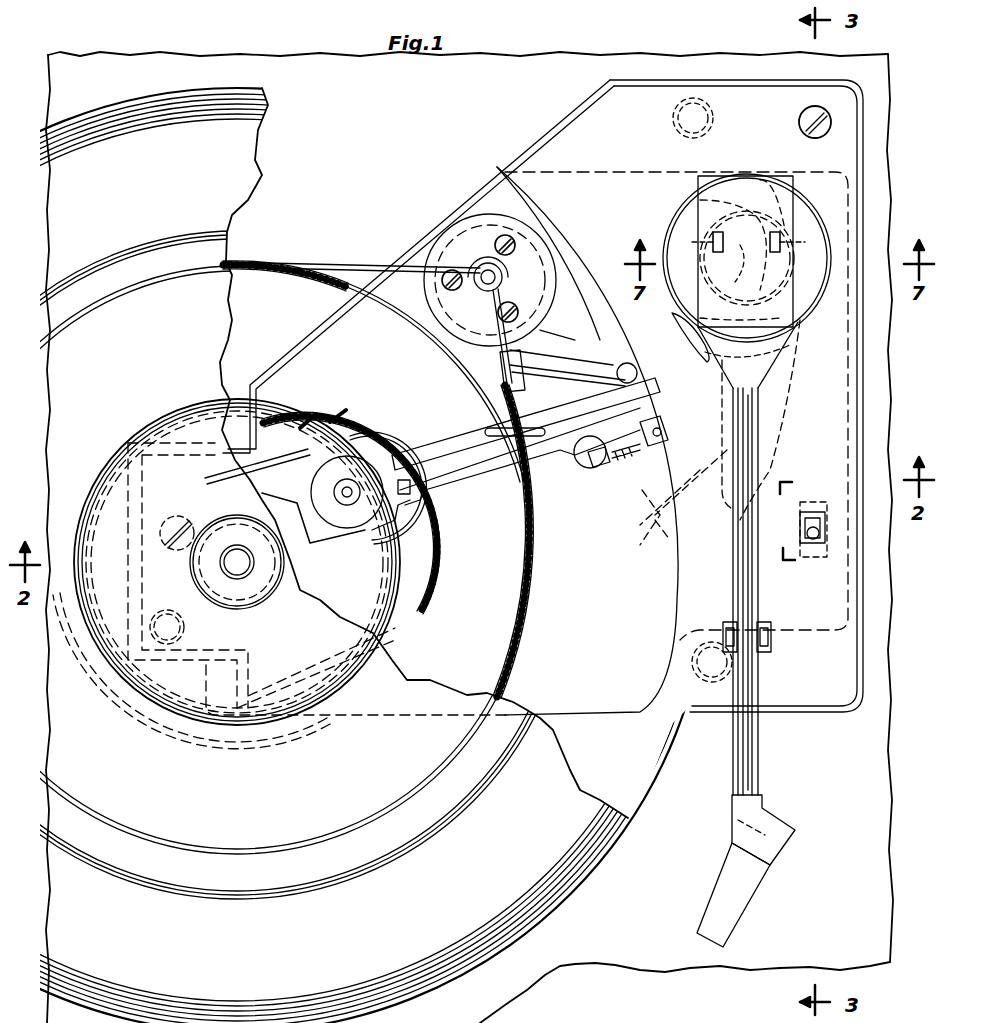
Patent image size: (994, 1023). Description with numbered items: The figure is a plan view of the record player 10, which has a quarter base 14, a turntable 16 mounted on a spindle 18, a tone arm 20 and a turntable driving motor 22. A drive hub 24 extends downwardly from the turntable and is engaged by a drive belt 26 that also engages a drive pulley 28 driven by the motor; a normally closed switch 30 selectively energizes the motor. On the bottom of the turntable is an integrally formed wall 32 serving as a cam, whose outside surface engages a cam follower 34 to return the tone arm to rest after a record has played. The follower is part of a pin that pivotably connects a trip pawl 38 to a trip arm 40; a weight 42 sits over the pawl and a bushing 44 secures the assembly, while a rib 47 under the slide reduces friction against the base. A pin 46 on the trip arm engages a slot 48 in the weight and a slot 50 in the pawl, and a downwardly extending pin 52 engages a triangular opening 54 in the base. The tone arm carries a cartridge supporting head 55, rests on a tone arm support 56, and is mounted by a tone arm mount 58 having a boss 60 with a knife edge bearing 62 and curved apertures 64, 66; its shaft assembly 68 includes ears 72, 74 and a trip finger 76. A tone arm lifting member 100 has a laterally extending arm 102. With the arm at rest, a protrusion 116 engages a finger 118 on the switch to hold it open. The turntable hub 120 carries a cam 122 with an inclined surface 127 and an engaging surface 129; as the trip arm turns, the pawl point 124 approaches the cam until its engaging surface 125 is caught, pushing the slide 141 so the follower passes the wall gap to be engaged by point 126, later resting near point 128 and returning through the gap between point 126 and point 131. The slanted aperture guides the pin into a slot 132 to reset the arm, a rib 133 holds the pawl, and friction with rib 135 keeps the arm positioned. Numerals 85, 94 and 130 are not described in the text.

The record player 10 is at (205, 42).
The base 14 is at (582, 118).
The turntable 16 is at (245, 100).
The spindle 18 is at (237, 575).
The tone arm 20 is at (768, 570).
The turntable driving motor 22 is at (552, 232).
The drive hub 24 is at (418, 346).
The drive belt 26 is at (345, 264).
The drive pulley 28 is at (487, 268).
The switch 30 is at (600, 468).
The wall 32 is at (434, 576).
The cam follower 34 is at (343, 505).
The trip pawl 38 is at (325, 425).
The trip arm 40 is at (468, 412).
The weight 42 is at (345, 470).
The bushing 44 is at (350, 478).
The pin 46 is at (410, 505).
The rib 47 is at (563, 440).
The slot 48 is at (385, 525).
The slot 50 is at (415, 455).
The pin 52 is at (500, 368).
The triangular opening 54 is at (560, 332).
The cartridge supporting head 55 is at (785, 845).
The tone arm support 56 is at (772, 640).
The tone arm mount 58 is at (825, 210).
The boss 60 is at (740, 180).
The knife edge bearing 62 is at (768, 200).
The curved aperture 64 is at (722, 200).
The curved aperture 66 is at (780, 320).
The shaft assembly 68 is at (785, 395).
The ear 72 is at (688, 220).
The ear 74 is at (850, 205).
The trip finger 76 is at (655, 530).
The cam follower 85 is at (700, 185).
The cam surface 94 is at (688, 240).
The tone arm lifting member 100 is at (712, 350).
The laterally extending arm 102 is at (733, 398).
The protrusion 116 is at (650, 455).
The finger 118 is at (595, 468).
The hub 120 is at (270, 610).
The cam 122 is at (169, 607).
The point 124 is at (210, 540).
The engaging surface 125 is at (222, 510).
The point 126 is at (172, 440).
The inclined surface 127 is at (195, 565).
The point 128 is at (405, 450).
The engaging surface 129 is at (195, 540).
The rod 130 is at (548, 365).
The point 131 is at (300, 415).
The slot 132 is at (625, 362).
The rib 133 is at (290, 450).
The rib 135 is at (575, 380).
The slide 141 is at (462, 480).